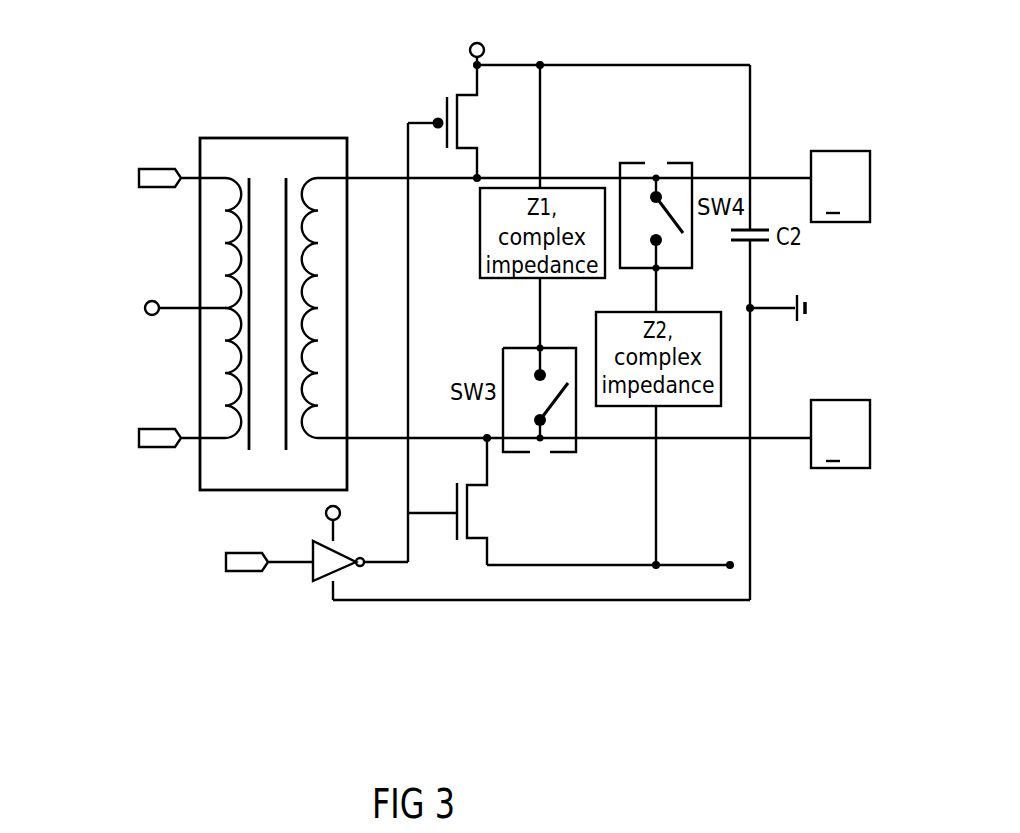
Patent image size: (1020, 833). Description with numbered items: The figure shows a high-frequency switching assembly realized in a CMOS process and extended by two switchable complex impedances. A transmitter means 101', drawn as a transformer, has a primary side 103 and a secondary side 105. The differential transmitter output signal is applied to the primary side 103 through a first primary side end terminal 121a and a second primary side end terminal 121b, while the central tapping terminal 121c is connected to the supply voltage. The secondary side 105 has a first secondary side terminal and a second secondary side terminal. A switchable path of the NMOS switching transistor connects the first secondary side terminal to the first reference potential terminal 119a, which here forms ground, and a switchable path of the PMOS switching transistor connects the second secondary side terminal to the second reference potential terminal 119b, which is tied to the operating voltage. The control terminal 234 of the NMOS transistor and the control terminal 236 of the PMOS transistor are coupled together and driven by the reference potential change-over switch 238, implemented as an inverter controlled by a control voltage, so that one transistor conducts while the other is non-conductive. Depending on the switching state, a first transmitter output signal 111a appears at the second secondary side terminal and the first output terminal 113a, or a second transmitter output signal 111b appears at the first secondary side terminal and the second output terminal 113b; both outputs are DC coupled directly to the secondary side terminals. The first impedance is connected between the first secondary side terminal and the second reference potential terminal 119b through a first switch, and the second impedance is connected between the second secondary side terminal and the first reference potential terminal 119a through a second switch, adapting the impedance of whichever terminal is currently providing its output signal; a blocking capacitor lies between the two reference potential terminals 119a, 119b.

The transmitter means 101' is at (273, 262).
The primary side 103 is at (233, 377).
The secondary side 105 is at (320, 293).
The first primary side end terminal 121a is at (139, 440).
The second primary side end terminal 121b is at (139, 180).
The central tapping terminal 121c is at (148, 301).
The first transmitter output signal 111a is at (737, 178).
The second transmitter output signal 111b is at (737, 441).
The first output terminal 113a is at (833, 150).
The second output terminal 113b is at (842, 470).
The first reference potential terminal 119a is at (753, 311).
The second reference potential terminal 119b is at (486, 49).
The control terminal of the first switching transistor MN1 234 is at (455, 516).
The control terminal of the second switching transistor MP1 236 is at (436, 126).
The reference potential change-over switch 238 is at (318, 583).